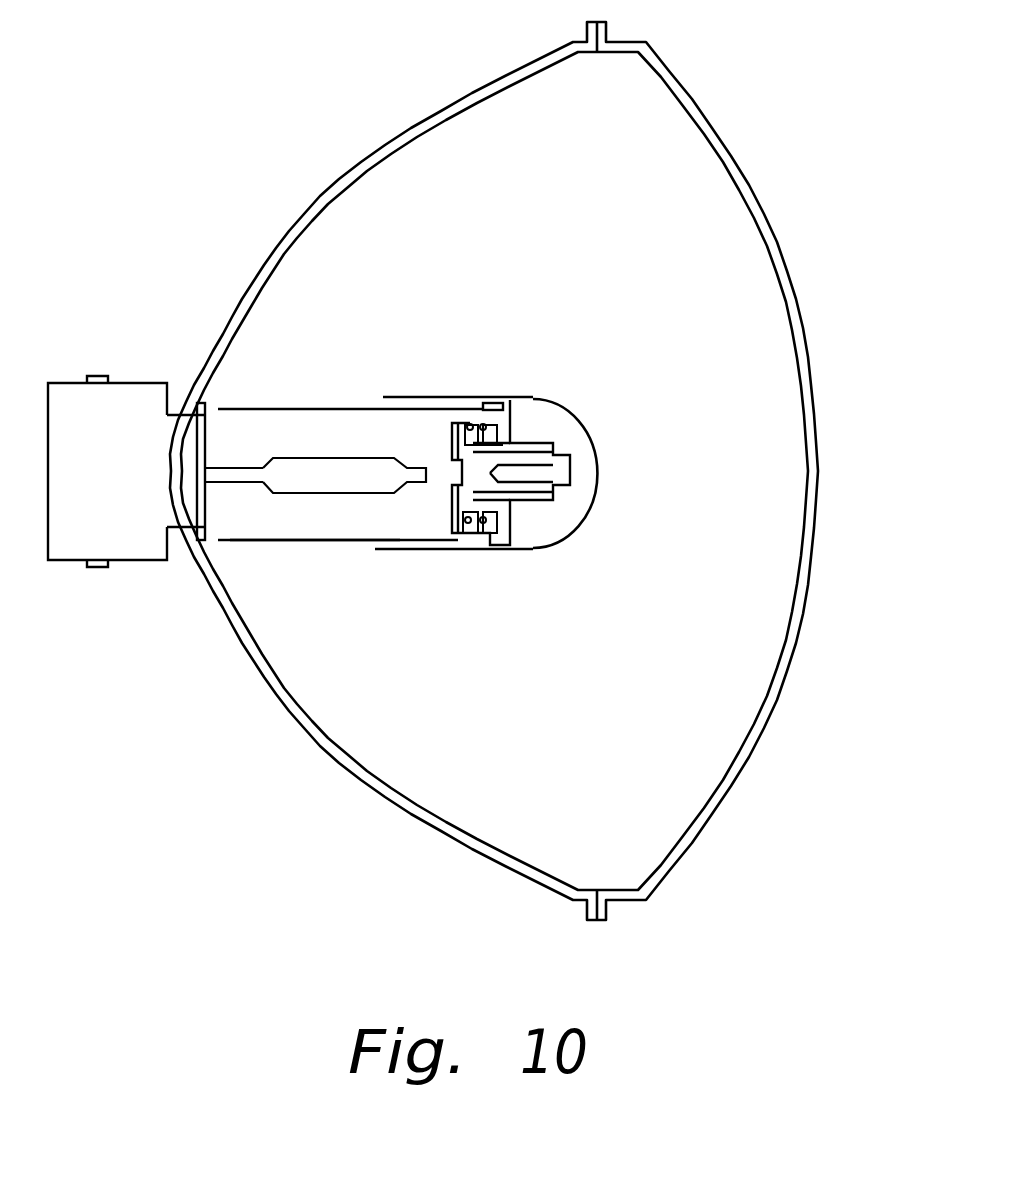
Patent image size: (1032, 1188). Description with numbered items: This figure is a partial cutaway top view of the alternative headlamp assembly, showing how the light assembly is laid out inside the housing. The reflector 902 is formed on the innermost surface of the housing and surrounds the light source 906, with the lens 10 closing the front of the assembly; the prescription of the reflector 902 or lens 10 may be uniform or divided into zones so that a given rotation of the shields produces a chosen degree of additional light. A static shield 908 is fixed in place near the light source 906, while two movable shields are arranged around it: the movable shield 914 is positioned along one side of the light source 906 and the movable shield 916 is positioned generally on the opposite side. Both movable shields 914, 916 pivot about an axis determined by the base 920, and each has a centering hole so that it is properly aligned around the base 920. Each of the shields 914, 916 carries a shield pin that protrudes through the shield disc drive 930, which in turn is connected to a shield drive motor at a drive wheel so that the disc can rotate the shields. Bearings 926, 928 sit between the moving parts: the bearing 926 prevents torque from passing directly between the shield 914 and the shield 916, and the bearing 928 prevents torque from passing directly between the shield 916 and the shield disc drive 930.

The lens 10 is at (476, 471).
The reflector 902 is at (354, 198).
The light source 906 is at (307, 494).
The static shield 908 is at (418, 396).
The movable shield 914 is at (317, 541).
The movable shield 916 is at (308, 408).
The base 920 is at (452, 480).
The bearing 926 is at (467, 531).
The bearing 928 is at (487, 528).
The shield disc drive 930 is at (493, 417).